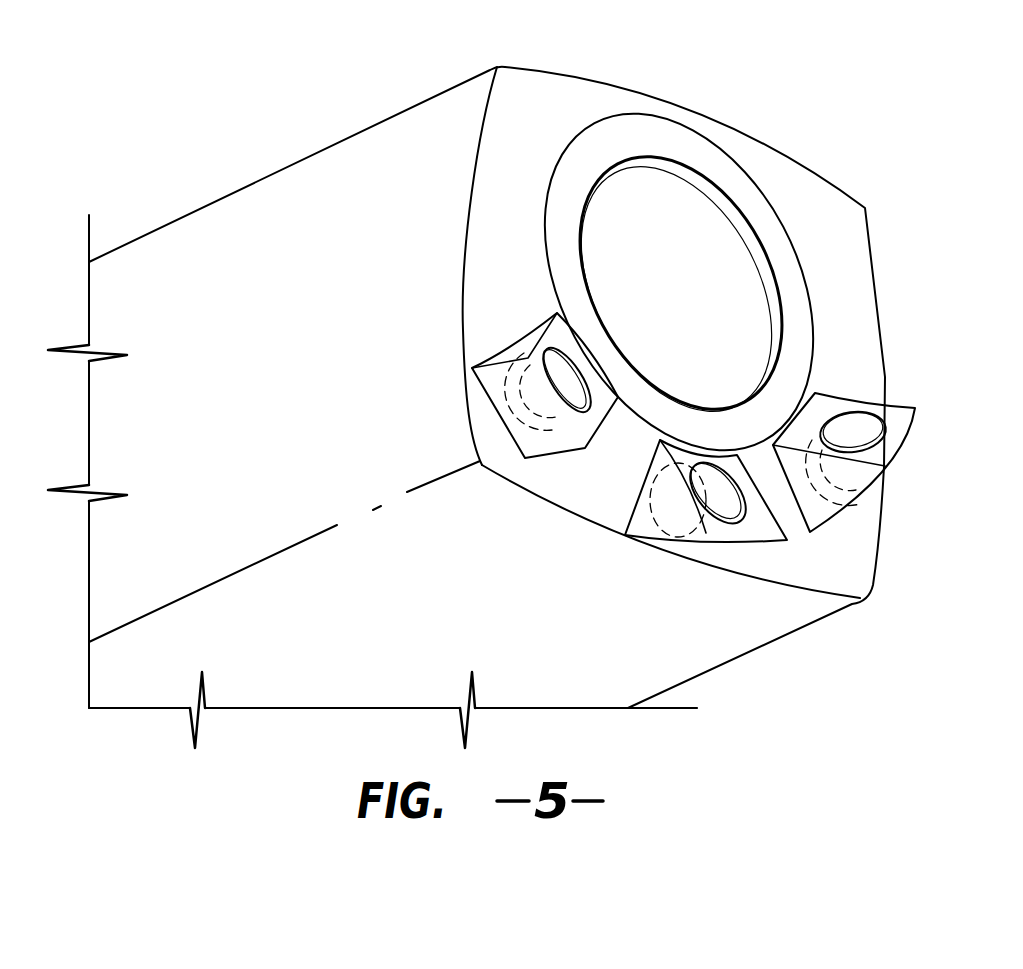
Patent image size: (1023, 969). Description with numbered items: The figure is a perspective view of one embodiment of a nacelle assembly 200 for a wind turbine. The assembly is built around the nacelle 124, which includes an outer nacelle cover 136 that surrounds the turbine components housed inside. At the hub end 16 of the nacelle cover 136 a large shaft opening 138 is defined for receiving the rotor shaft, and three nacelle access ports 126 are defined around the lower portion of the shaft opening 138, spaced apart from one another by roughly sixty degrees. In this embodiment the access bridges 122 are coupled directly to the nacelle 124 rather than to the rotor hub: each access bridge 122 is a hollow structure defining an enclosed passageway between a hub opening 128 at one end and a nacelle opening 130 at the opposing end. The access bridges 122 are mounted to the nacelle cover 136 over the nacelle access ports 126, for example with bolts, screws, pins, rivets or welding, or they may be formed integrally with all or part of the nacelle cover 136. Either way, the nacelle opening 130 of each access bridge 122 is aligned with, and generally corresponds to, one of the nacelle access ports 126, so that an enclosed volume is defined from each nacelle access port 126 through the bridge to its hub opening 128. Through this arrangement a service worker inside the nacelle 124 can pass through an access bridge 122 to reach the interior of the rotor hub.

The hub end 16 is at (530, 100).
The access bridge 122 is at (519, 444).
The nacelle 124 is at (377, 129).
The nacelle access port 126 is at (677, 466).
The hub opening 128 is at (559, 315).
The nacelle opening 130 is at (492, 401).
The nacelle cover 136 is at (220, 243).
The shaft opening 138 is at (705, 185).
The nacelle assembly 200 is at (912, 191).